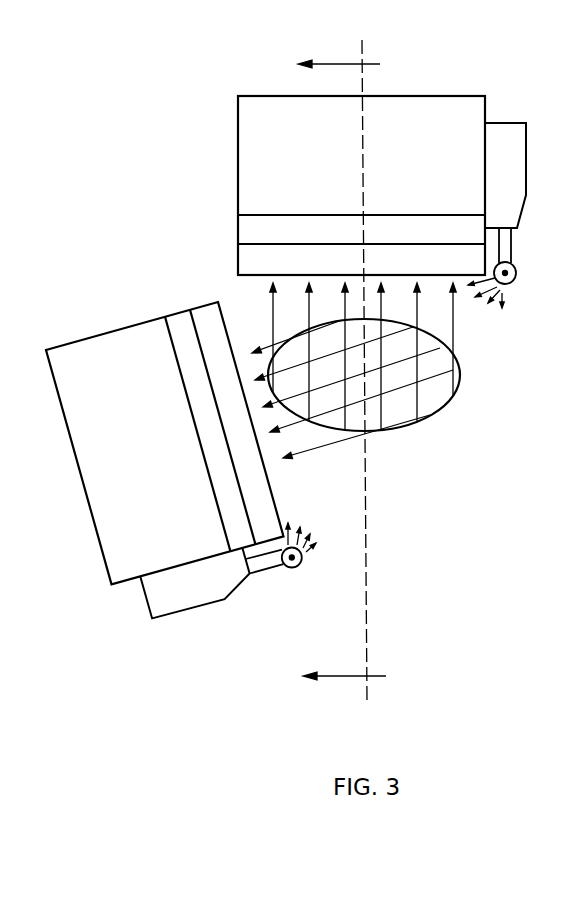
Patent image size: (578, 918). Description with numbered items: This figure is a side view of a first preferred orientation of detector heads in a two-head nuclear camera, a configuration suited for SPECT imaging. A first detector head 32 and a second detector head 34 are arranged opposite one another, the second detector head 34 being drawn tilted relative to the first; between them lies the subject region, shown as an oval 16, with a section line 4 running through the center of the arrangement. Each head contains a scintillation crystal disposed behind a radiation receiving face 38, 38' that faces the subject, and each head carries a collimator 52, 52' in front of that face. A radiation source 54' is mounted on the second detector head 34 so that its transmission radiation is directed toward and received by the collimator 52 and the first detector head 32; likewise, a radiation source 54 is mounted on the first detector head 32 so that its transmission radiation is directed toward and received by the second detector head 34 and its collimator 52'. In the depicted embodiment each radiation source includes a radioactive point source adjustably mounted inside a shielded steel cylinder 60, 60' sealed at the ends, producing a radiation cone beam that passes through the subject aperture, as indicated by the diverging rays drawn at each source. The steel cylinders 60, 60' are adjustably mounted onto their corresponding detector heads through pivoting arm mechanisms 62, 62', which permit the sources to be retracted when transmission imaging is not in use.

The section line 4- 4 is at (328, 373).
The wafer / workpiece 16 is at (448, 402).
The first detector head 32 is at (361, 185).
The second detector head 34 is at (165, 443).
The radiation receiving face 38 is at (323, 215).
The radiation receiving face 38' is at (157, 414).
The collimator 52 is at (323, 248).
The collimator 52' is at (190, 399).
The radiation source 54 is at (528, 259).
The radiation source 54' is at (290, 580).
The shielded steel cylinder 60 is at (499, 304).
The shielded steel cylinder 60' is at (283, 567).
The pivoting arm mechanism 62 is at (524, 175).
The pivoting arm mechanism 62' is at (194, 600).